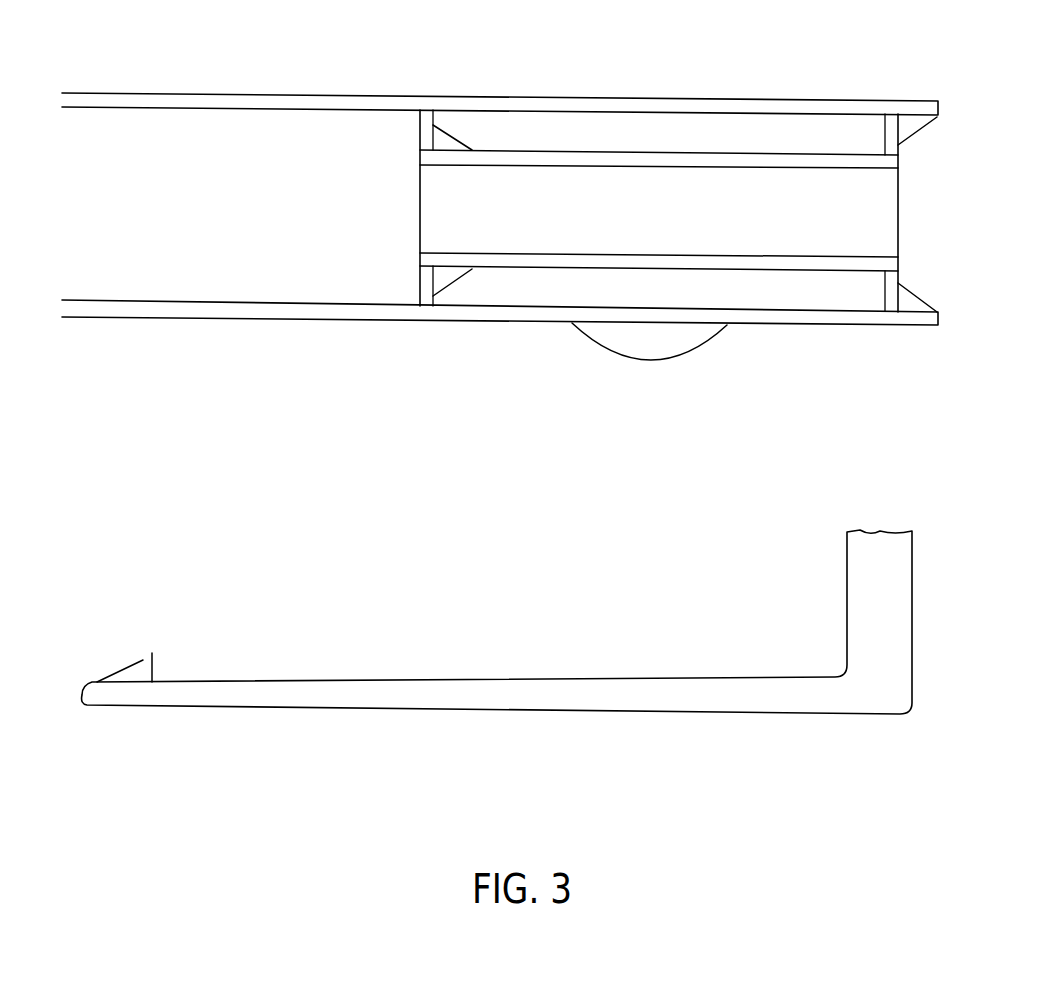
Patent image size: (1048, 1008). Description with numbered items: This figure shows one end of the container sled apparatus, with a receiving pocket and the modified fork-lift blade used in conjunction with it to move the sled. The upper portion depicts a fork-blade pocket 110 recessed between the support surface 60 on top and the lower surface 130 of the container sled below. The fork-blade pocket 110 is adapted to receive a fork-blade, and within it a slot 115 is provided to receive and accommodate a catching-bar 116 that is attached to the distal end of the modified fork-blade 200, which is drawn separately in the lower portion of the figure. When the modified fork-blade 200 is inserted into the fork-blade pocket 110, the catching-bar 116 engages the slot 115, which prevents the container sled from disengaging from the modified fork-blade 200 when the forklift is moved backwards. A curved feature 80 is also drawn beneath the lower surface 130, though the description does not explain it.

The support surface 60 is at (833, 99).
The opening 80 is at (668, 348).
The fork-blade pocket 110 is at (880, 225).
The slot 115 is at (439, 138).
The catching-bar 116 is at (143, 658).
The lower surface 130 is at (818, 325).
The modified fork-blade 200 is at (885, 613).